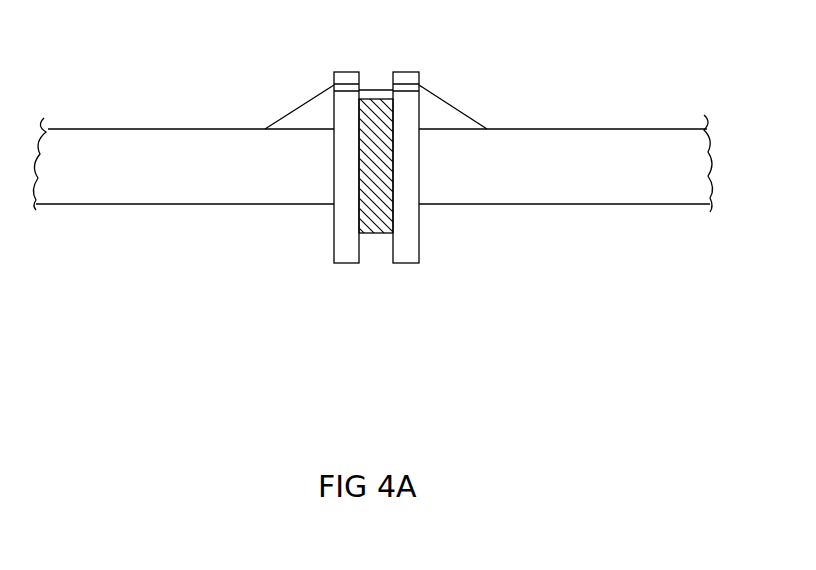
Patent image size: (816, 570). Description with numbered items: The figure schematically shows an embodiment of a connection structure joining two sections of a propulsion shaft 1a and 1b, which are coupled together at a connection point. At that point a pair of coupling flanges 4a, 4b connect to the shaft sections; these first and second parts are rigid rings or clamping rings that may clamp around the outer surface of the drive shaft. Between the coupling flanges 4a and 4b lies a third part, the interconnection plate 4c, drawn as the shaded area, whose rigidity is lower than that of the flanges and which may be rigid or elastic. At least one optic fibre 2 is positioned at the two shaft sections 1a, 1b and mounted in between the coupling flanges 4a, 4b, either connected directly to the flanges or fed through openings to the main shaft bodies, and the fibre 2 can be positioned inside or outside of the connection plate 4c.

The propulsion shaft section 1a is at (150, 147).
The propulsion shaft section 1b is at (563, 150).
The optic fibre 2 is at (377, 90).
The coupling flange 4a is at (348, 247).
The coupling flange 4b is at (408, 244).
The interconnection plate 4c is at (370, 235).